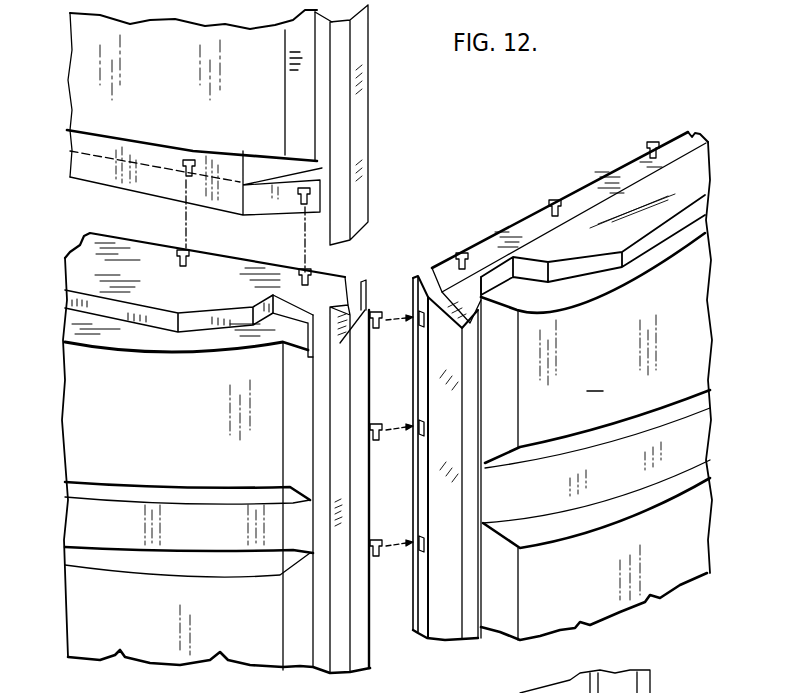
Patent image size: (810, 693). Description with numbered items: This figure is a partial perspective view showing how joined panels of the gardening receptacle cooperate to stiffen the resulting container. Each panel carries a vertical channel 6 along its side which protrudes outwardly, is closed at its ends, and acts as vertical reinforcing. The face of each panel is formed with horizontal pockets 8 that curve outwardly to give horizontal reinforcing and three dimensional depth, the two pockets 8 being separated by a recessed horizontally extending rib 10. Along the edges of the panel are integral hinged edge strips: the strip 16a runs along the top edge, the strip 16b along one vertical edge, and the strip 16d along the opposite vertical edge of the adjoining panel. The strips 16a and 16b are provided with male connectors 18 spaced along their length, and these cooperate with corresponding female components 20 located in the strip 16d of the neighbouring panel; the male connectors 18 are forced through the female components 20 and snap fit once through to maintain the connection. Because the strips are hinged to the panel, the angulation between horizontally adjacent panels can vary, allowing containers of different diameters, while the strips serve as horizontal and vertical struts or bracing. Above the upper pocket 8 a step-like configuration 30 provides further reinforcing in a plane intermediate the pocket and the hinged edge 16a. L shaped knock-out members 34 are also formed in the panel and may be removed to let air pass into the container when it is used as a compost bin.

The vertical channel 6 is at (362, 154).
The horizontal pocket 8 is at (80, 382).
The recessed horizontally extending rib 10 is at (684, 448).
The hinged edge strip 16a is at (587, 193).
The hinged edge strip 16b is at (366, 290).
The hinged edge strip 16d is at (422, 614).
The male connector 18 is at (178, 250).
The female component 20 is at (298, 202).
The step-like configuration 30 is at (684, 202).
The L-shaped knock-out member 34 is at (492, 277).